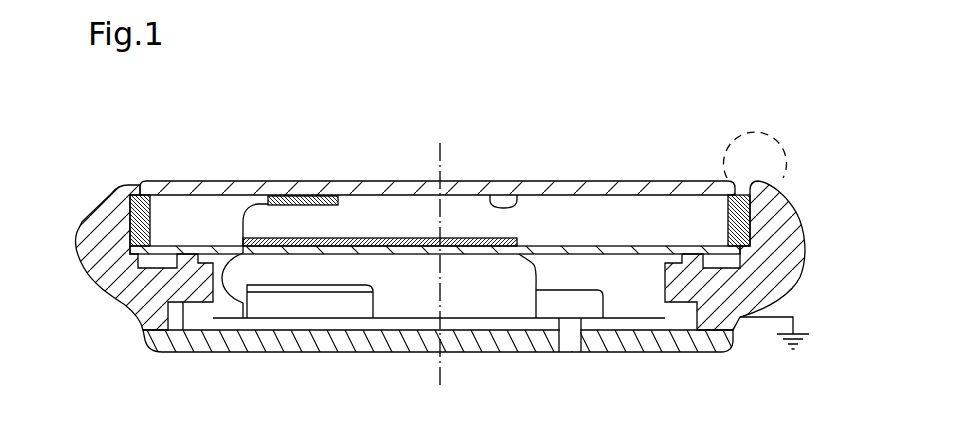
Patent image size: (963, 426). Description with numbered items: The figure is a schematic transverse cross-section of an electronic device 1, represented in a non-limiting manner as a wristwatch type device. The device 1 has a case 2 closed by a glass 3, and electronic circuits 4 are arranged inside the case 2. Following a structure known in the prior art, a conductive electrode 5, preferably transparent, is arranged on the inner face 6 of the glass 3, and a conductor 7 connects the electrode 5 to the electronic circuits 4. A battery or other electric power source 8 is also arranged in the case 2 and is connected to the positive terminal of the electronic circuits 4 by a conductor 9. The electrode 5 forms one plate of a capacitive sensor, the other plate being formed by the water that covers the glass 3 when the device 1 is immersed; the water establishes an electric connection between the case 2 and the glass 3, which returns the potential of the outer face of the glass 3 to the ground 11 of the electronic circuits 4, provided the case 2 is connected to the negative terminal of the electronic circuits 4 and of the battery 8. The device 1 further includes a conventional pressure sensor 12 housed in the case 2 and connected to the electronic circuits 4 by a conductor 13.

The electronic device 1 is at (813, 176).
The case 2 is at (90, 266).
The glass 3 is at (167, 188).
The electronic circuits 4 is at (391, 247).
The conductive electrode 5 is at (313, 197).
The inner face 6 is at (520, 193).
The conductor 7 is at (256, 205).
The battery 8 is at (313, 312).
The conductor 9 is at (240, 290).
The ground 11 is at (795, 331).
The pressure sensor 12 is at (593, 310).
The conductor 13 is at (534, 265).